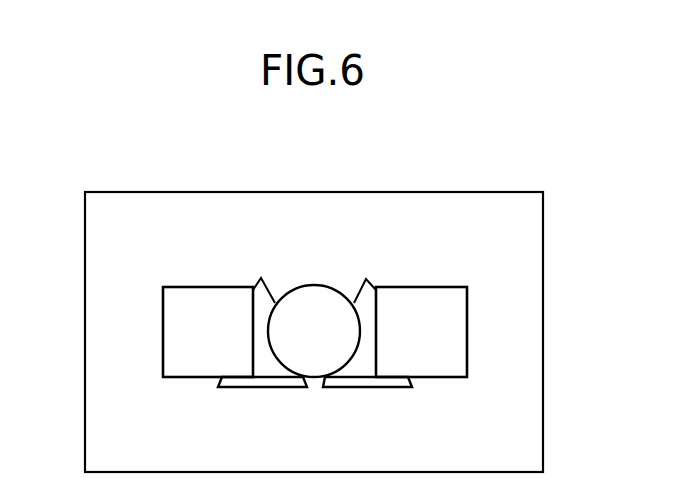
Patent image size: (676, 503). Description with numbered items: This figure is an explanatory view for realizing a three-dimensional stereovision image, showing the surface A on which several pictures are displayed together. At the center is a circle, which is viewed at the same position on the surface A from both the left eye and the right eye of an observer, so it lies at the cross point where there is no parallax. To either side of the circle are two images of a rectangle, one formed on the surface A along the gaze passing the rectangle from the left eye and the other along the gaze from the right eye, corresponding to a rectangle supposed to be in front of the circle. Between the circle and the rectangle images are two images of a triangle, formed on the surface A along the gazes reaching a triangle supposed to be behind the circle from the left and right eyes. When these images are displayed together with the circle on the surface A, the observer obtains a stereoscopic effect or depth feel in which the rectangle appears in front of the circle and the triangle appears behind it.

The surface A is at (517, 205).